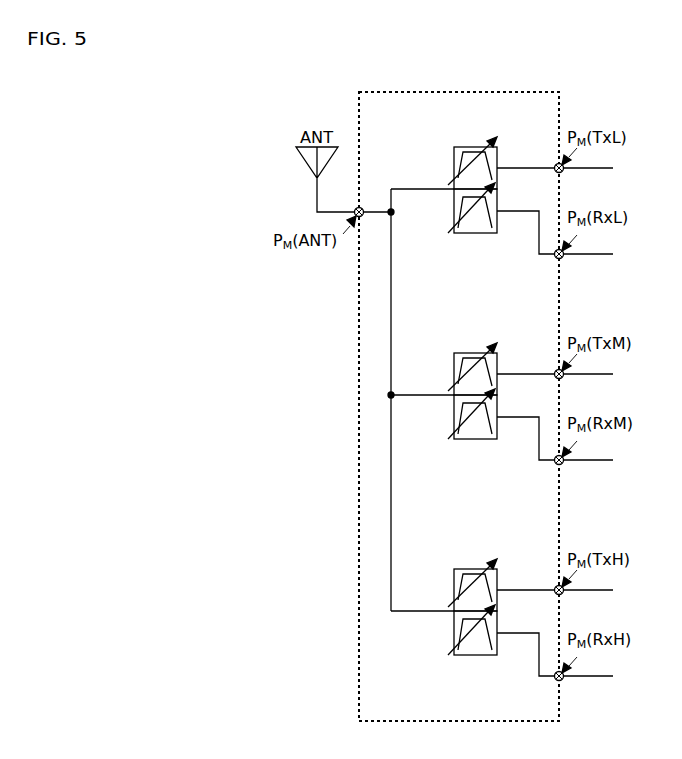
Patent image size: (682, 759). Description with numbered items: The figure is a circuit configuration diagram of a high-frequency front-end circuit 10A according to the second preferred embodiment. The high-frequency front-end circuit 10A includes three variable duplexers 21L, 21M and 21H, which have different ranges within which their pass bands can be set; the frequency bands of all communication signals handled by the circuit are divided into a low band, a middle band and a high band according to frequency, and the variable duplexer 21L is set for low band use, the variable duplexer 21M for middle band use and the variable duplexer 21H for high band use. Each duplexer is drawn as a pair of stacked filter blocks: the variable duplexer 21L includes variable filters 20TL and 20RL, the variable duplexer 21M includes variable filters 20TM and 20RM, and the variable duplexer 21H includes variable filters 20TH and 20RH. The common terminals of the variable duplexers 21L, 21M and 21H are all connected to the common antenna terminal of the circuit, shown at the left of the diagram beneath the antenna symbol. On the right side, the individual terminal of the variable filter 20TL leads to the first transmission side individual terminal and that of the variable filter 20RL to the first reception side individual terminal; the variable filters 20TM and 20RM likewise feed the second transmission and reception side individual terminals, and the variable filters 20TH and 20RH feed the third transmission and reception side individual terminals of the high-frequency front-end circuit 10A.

The high-frequency front-end circuit 10A is at (520, 92).
The variable filter 20TL is at (454, 147).
The variable duplexer 21L is at (504, 141).
The variable filter 20RL is at (487, 233).
The variable filter 20TM is at (454, 353).
The variable duplexer 21M is at (504, 347).
The variable filter 20RM is at (487, 439).
The variable filter 20TH is at (454, 569).
The variable duplexer 21H is at (504, 563).
The variable filter 20RH is at (487, 655).